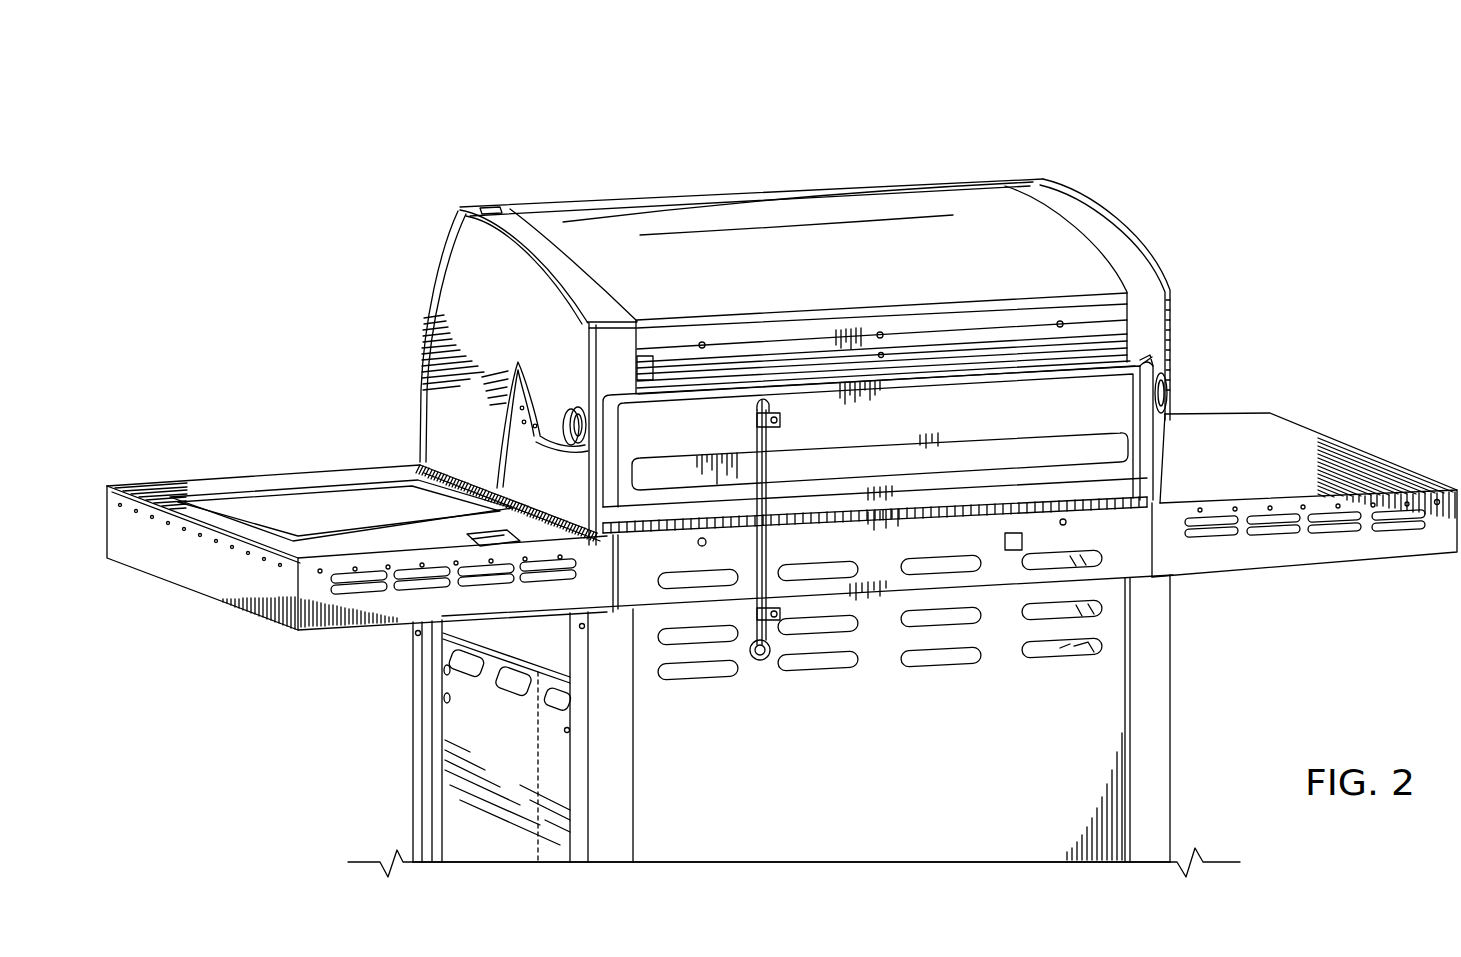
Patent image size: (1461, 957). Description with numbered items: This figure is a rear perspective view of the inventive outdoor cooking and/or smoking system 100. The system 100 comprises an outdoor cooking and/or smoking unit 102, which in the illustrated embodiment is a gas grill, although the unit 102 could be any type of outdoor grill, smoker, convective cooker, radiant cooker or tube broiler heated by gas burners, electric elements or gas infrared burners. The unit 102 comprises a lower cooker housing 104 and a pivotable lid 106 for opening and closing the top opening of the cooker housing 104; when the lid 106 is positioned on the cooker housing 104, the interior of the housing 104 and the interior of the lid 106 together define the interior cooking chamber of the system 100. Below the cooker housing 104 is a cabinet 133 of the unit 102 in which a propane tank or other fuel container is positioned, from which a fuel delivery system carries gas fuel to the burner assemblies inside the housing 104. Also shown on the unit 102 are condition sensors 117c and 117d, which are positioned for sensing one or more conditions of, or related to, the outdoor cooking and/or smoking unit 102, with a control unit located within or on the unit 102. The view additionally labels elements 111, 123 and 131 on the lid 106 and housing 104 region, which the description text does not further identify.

The outdoor cooking and/or smoking system 100 is at (478, 101).
The outdoor cooking and/or smoking unit 102 is at (442, 436).
The lower cooker housing 104 is at (1150, 488).
The pivotable lid 106 is at (752, 192).
The lower rim 111 is at (956, 352).
The lid trim 123 is at (808, 330).
The front panel 131 is at (1118, 402).
The cabinet 133 is at (892, 797).
The condition sensor 117c is at (1008, 551).
The condition sensor 117d is at (492, 528).